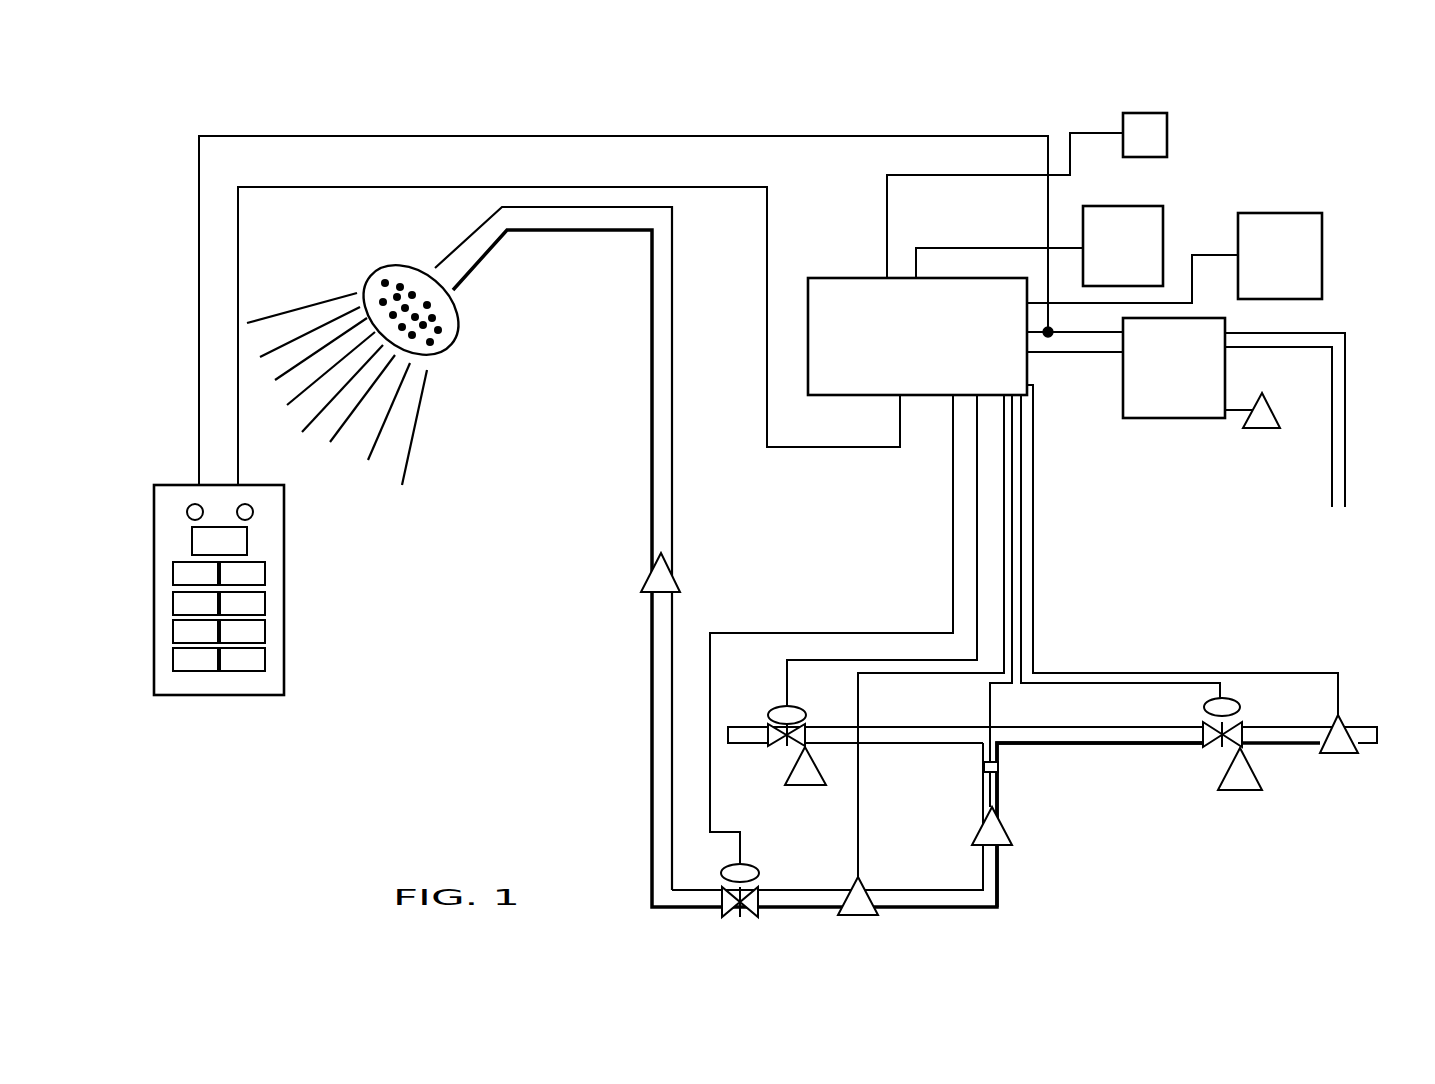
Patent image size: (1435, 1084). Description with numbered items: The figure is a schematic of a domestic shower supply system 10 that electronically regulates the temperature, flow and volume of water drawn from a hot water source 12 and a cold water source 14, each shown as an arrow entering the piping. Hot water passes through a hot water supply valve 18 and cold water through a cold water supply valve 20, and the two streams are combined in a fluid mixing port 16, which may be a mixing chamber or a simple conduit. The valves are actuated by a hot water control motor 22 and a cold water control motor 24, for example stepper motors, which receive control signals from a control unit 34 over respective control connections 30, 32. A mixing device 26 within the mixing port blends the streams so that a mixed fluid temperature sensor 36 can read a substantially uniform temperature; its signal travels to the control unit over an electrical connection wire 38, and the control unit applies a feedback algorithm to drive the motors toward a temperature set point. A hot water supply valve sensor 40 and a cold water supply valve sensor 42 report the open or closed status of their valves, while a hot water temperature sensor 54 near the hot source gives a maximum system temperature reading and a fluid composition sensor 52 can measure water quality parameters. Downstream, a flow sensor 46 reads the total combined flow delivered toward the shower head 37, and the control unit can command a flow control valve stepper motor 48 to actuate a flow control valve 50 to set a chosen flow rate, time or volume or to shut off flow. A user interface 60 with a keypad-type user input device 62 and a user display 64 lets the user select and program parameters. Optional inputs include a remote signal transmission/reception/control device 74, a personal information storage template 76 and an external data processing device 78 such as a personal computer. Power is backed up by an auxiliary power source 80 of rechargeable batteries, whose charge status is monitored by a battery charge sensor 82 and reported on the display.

The domestic shower supply system 10 is at (505, 683).
The hot water source 12 is at (1398, 735).
The cold water source 14 is at (712, 735).
The fluid mixing port 16 is at (1000, 762).
The hot water supply valve 18 is at (1205, 748).
The cold water supply valve 20 is at (783, 747).
The hot water control motor 22 is at (1240, 702).
The cold water control motor 24 is at (777, 703).
The mixing device 26 is at (982, 768).
The control connection 30 is at (1095, 683).
The control connection 32 is at (977, 496).
The control unit 34 is at (815, 278).
The mixed fluid temperature sensor 36 is at (978, 820).
The shower head 37 is at (455, 308).
The electrical connection wire 38 is at (990, 707).
The hot water supply valve sensor 40 is at (1262, 790).
The cold water supply valve sensor 42 is at (826, 785).
The flow sensor 46 is at (672, 565).
The flow control valve stepper motor 48 is at (753, 865).
The flow control valve 50 is at (748, 915).
The fluid composition sensor 52 is at (863, 917).
The hot water temperature sensor 54 is at (1343, 755).
The user interface 60 is at (251, 633).
The user input device 62 is at (284, 605).
The user display 64 is at (247, 528).
The signal transmission/reception/control device 74 is at (1163, 243).
The personal information storage template 76 is at (1167, 125).
The external data processing device 78 is at (1258, 213).
The auxiliary power source 80 is at (1225, 366).
The battery charge sensor 82 is at (1276, 420).